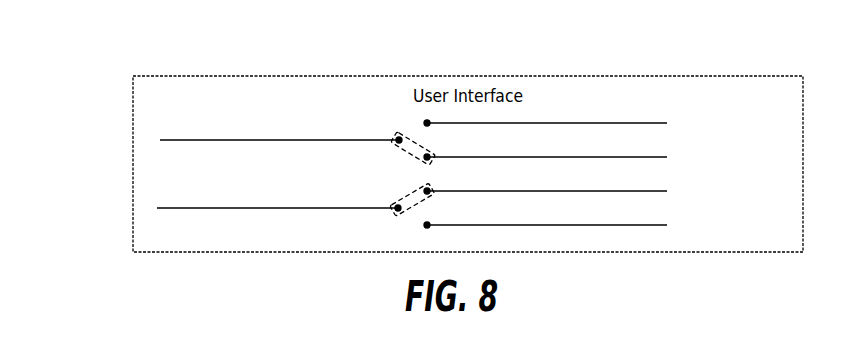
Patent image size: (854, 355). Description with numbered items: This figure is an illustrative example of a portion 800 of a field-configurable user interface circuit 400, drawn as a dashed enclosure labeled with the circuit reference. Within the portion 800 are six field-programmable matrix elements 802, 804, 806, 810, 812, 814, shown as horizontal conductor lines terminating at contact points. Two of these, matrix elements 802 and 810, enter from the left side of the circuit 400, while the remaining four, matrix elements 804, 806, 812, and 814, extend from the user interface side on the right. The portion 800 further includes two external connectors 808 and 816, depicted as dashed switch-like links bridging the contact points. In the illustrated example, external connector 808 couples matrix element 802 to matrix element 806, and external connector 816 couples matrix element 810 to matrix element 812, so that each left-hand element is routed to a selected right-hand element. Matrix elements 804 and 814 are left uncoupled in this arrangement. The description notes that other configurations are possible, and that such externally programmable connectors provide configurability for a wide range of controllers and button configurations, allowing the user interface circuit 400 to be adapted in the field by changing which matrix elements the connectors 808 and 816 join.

The portion 800 is at (155, 35).
The field-configurable user interface circuit 400 is at (133, 116).
The field-programmable matrix element 802 is at (245, 140).
The field-programmable matrix element 810 is at (245, 207).
The field-programmable matrix element 804 is at (627, 122).
The field-programmable matrix element 806 is at (610, 156).
The field-programmable matrix element 812 is at (610, 190).
The field-programmable matrix element 814 is at (610, 224).
The external connector 808 is at (396, 133).
The external connector 816 is at (407, 195).